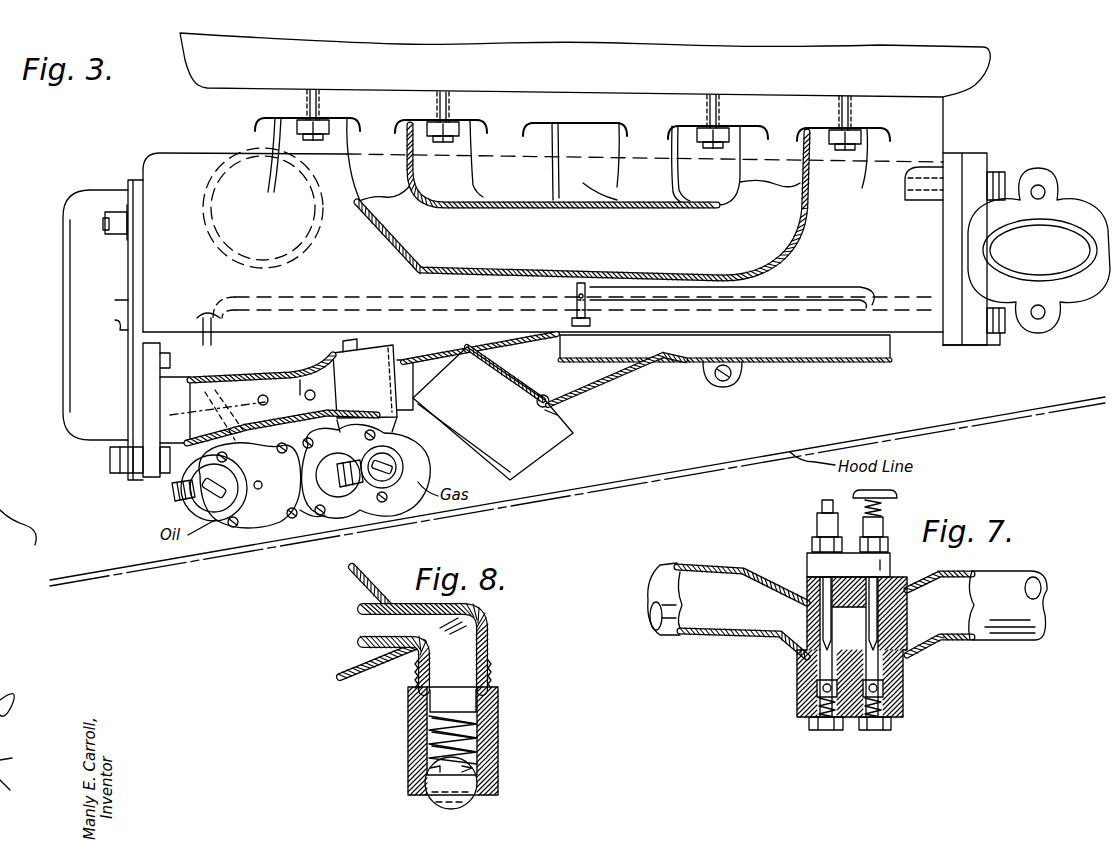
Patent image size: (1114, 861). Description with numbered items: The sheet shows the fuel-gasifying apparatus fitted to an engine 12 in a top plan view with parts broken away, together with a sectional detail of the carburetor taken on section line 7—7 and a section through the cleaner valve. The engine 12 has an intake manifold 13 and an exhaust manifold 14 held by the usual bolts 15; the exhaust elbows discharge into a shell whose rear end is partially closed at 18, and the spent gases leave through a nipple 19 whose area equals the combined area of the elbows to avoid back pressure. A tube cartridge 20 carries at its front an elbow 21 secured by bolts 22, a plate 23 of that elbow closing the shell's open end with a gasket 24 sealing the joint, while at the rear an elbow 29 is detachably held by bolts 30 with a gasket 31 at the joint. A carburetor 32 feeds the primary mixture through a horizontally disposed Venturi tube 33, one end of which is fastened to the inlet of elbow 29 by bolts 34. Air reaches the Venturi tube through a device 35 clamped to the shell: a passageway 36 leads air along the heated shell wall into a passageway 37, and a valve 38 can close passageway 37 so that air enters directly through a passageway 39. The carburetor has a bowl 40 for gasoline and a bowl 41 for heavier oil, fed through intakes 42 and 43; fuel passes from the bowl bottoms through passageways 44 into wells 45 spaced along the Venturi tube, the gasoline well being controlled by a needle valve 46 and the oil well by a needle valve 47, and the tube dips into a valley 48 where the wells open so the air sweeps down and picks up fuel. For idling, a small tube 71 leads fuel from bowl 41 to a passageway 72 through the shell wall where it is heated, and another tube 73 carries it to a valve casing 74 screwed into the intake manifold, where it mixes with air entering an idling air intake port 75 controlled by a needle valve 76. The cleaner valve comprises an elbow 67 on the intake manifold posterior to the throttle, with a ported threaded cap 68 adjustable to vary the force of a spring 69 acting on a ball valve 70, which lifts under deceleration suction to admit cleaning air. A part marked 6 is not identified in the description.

In FIG. 3, the engine 12 is at (965, 72).
In FIG. 3, the partially closed rear end 18 is at (155, 150).
In FIG. 3, the bolts 30 is at (113, 212).
In FIG. 3, the gasket 31 is at (128, 272).
In FIG. 3, the elbow 29 is at (63, 307).
In FIG. 3, the flange 7 is at (360, 383).
In FIG. 3, the bolts 34 is at (110, 464).
In FIG. 3, the nipple 19 is at (300, 265).
In FIG. 3, the exhaust manifold 14 is at (608, 145).
In FIG. 3, the bolts 15 is at (716, 150).
In FIG. 3, the intake manifold 13 is at (768, 205).
In FIG. 8, the intake manifold 13 is at (352, 585).
In FIG. 3, the cartridge 20 is at (978, 153).
In FIG. 3, the plate 23 is at (980, 347).
In FIG. 3, the bolts 22 is at (1000, 335).
In FIG. 3, the gasket 24 is at (955, 226).
In FIG. 3, the elbow 21 is at (1068, 195).
In FIG. 3, the passageway 72 is at (365, 300).
In FIG. 3, the tube 71 is at (203, 340).
In FIG. 3, the tube 73 is at (800, 292).
In FIG. 3, the valve casing 74 is at (577, 288).
In FIG. 3, the idling air intake port 75 is at (577, 308).
In FIG. 3, the needle valve 76 is at (592, 328).
In FIG. 3, the passageway 36 is at (790, 362).
In FIG. 3, the Venturi tube 33 is at (232, 376).
In FIG. 7, the Venturi tube 33 is at (1008, 582).
In FIG. 3, the wells 45 is at (263, 395).
In FIG. 7, the wells 45 is at (817, 703).
In FIG. 3, the carburetor connection 6 is at (300, 388).
In FIG. 3, the valve 38 is at (508, 378).
In FIG. 3, the device 35 is at (620, 385).
In FIG. 3, the passageway 37 is at (580, 378).
In FIG. 3, the passageway 39 is at (540, 448).
In FIG. 3, the bowl for heavier oil 41 is at (250, 520).
In FIG. 3, the intake 43 is at (172, 499).
In FIG. 3, the bowl for gasoline 40 is at (345, 505).
In FIG. 3, the intake 42 is at (350, 455).
In FIG. 3, the carburetor 32 is at (295, 522).
In FIG. 7, the carburetor 32 is at (903, 715).
In FIG. 8, the elbow 67 is at (450, 660).
In FIG. 8, the ported threaded cap 68 is at (498, 722).
In FIG. 8, the spring 69 is at (423, 732).
In FIG. 8, the ball valve 70 is at (470, 782).
In FIG. 7, the valley 48 is at (912, 637).
In FIG. 7, the needle valve 47 is at (823, 625).
In FIG. 7, the needle valve 46 is at (877, 625).
In FIG. 7, the passageways 44 is at (817, 685).